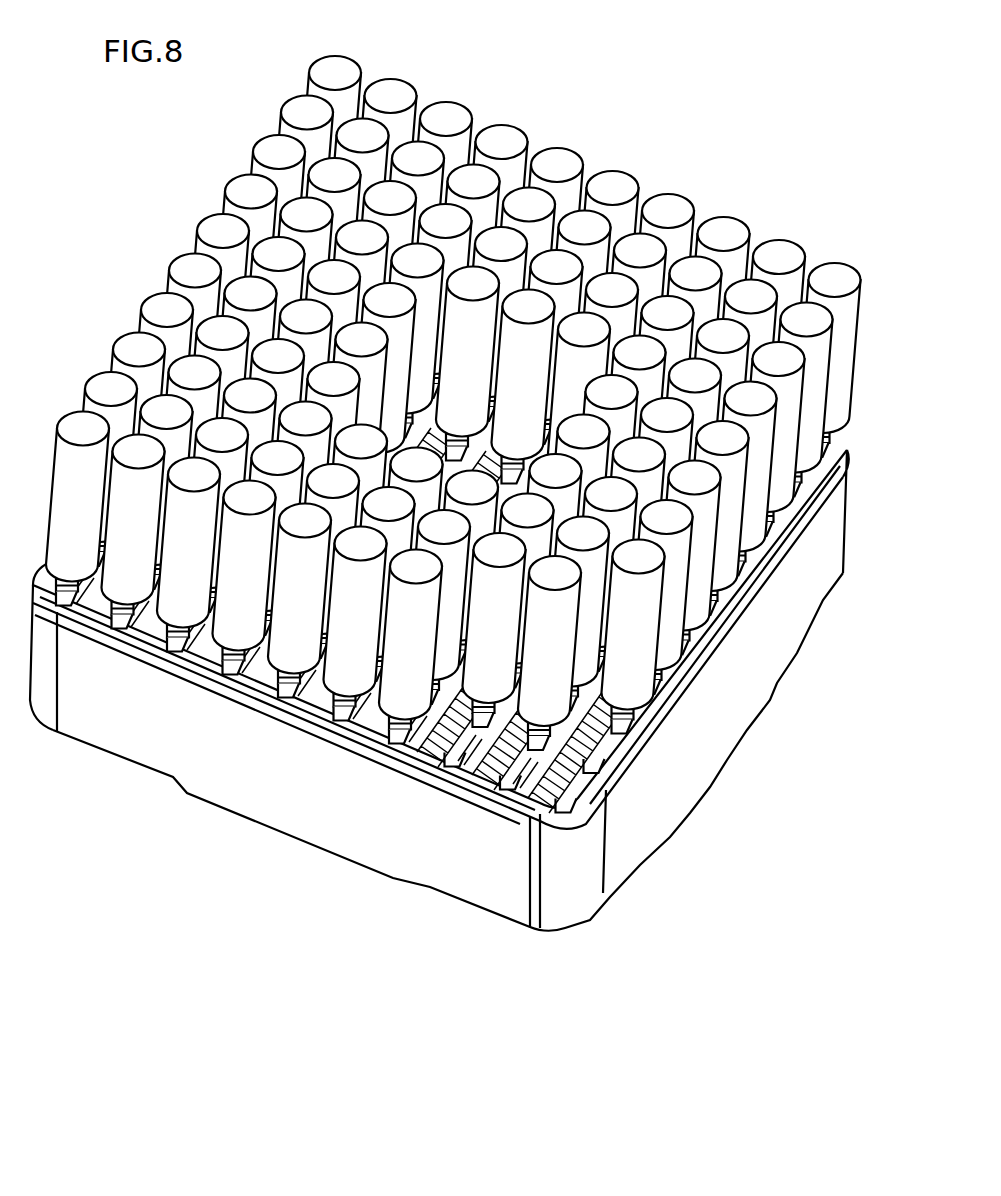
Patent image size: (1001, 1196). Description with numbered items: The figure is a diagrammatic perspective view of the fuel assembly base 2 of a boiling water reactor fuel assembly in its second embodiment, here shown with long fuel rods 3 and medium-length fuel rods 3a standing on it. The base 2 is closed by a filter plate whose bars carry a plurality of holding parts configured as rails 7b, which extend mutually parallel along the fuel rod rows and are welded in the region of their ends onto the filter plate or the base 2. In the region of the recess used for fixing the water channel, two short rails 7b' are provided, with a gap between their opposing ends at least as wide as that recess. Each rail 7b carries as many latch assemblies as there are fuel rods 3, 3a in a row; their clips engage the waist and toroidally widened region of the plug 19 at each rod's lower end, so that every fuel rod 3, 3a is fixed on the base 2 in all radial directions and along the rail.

The fuel assembly base 2 is at (622, 826).
The fuel rod 3 is at (622, 663).
The medium-length fuel rod 3a is at (557, 645).
The rail 7b is at (173, 700).
The short rail 7b' is at (334, 711).
The plug 19 is at (266, 682).